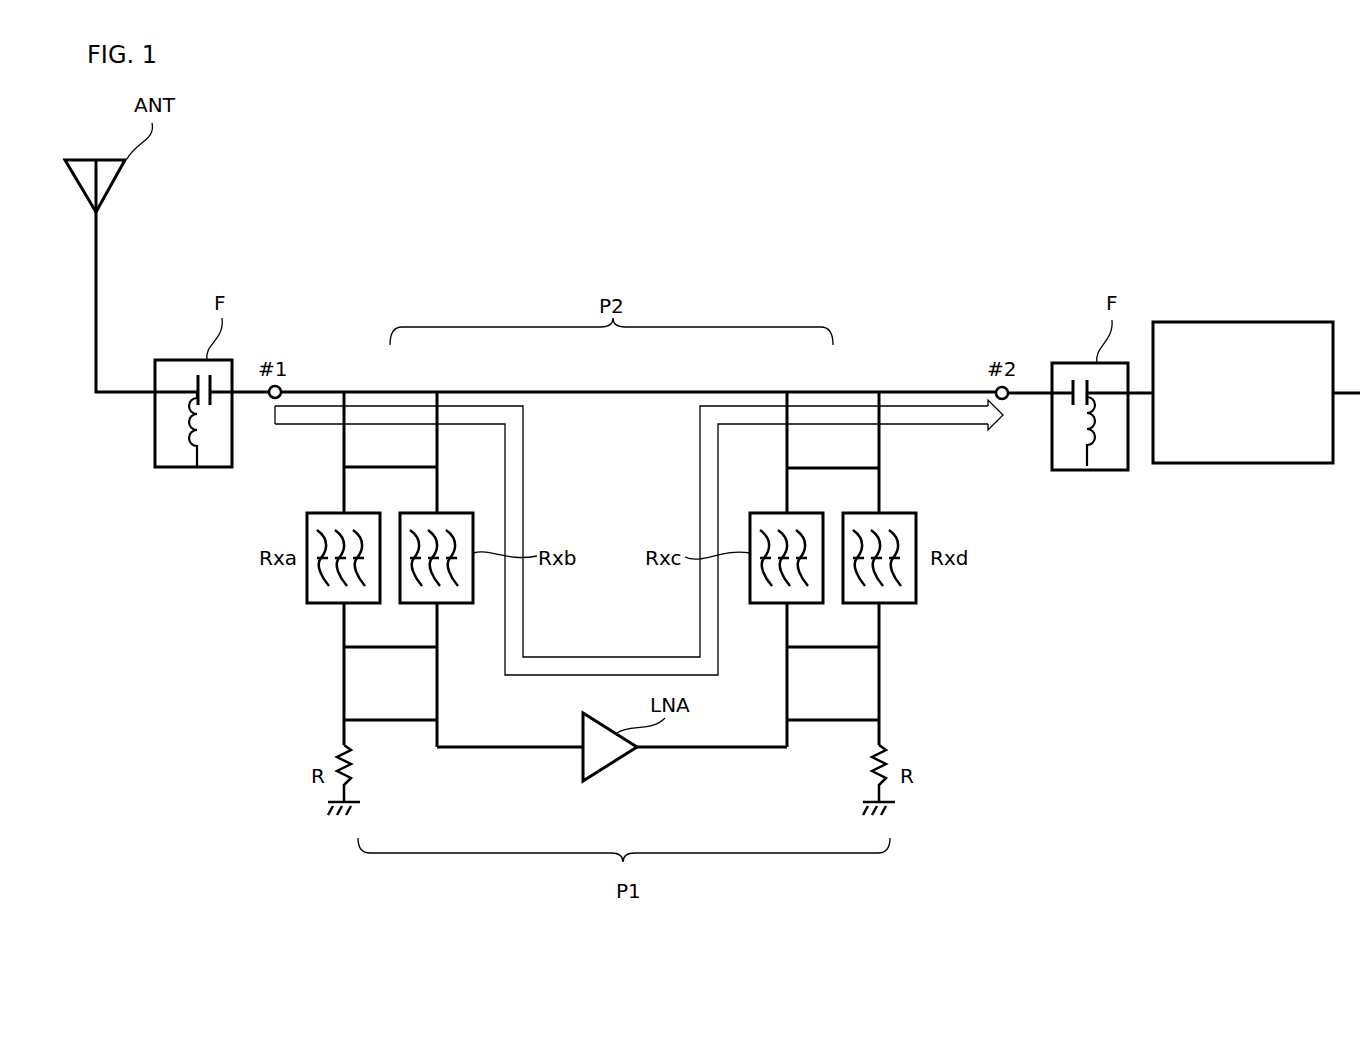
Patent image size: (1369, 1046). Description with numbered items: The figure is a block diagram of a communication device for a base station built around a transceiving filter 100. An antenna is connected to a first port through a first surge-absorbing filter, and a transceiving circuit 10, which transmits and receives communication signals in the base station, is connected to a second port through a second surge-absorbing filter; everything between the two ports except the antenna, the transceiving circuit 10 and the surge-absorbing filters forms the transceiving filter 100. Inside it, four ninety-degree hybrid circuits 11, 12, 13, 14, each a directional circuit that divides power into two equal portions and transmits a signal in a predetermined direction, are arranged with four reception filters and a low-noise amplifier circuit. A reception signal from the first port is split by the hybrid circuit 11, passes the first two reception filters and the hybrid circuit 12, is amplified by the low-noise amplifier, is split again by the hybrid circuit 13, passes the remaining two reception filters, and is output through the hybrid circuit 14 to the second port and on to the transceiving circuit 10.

The transceiving filter 100 is at (752, 238).
The transceiving circuit 10 is at (1265, 322).
The hybrid circuit 11 is at (453, 385).
The hybrid circuit 12 is at (447, 633).
The hybrid circuit 13 is at (888, 633).
The hybrid circuit 14 is at (893, 385).